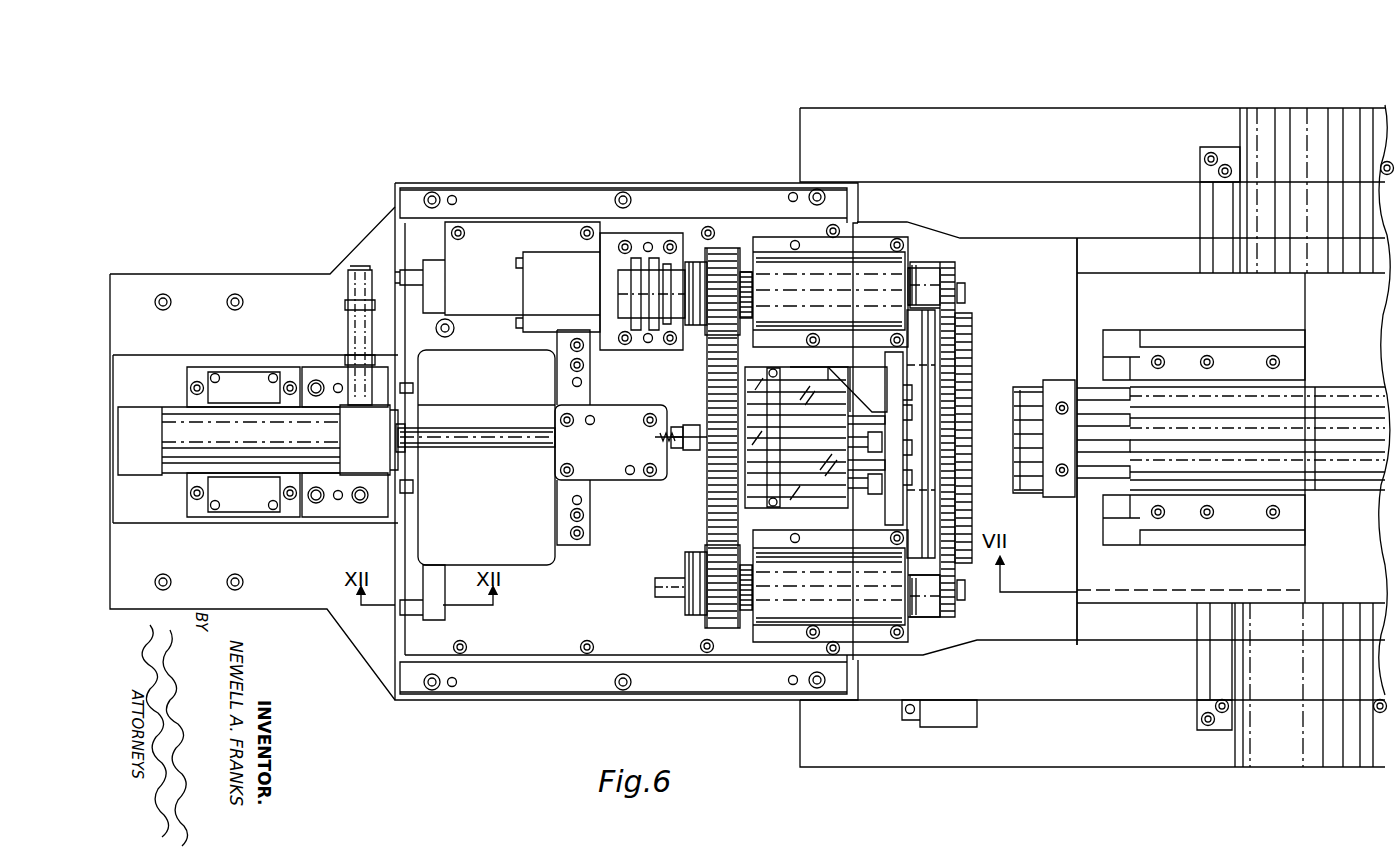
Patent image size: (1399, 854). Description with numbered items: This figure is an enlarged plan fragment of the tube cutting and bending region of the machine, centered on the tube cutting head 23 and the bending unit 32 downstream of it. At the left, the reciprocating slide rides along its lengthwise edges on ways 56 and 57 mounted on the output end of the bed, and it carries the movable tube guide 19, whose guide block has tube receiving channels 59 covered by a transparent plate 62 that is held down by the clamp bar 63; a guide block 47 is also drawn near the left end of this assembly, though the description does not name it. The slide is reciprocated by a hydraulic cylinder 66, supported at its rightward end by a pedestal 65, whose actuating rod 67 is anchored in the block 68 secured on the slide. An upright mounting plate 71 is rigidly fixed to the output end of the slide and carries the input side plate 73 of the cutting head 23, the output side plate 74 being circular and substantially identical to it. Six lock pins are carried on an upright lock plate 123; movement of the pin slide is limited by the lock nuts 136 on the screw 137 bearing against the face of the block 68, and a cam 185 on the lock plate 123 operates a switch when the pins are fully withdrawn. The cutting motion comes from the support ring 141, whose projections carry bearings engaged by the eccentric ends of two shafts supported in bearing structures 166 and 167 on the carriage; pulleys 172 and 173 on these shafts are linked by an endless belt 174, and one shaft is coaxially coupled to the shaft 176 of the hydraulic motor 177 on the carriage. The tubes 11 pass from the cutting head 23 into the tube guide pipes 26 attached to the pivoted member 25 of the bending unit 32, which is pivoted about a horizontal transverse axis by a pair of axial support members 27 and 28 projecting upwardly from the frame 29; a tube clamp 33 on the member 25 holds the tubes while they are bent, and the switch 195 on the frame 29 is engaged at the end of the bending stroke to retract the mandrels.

The tube 11 is at (858, 478).
The movable tube guide 19 is at (800, 392).
The tube cutting head 23 is at (995, 305).
The pivoted member 25 is at (1080, 318).
The tube guide pipe 26 is at (1030, 495).
The axial support member 27 is at (1207, 192).
The axial support member 28 is at (1212, 680).
The frame 29 is at (1228, 745).
The tube bending unit 32 is at (1222, 135).
The tube clamp 33 is at (1226, 355).
The guide block 47 is at (245, 370).
The way 56 is at (530, 195).
The way 57 is at (557, 682).
The tube receiving channel 59 is at (828, 488).
The transparent plate 62 is at (835, 390).
The clamp bar 63 is at (782, 442).
The pedestal 65 is at (402, 458).
The hydraulic cylinder 66 is at (178, 462).
The actuating rod 67 is at (480, 437).
The block 68 is at (600, 462).
The mounting plate 71 is at (918, 512).
The input side plate 73 is at (928, 315).
The output side plate 74 is at (972, 336).
The lock plate 123 is at (890, 540).
The lock nut 136 is at (687, 452).
The screw 137 is at (688, 428).
The support ring 141 is at (953, 266).
The bearing structure 166 is at (842, 291).
The bearing structure 167 is at (854, 589).
The pulley 172 is at (742, 250).
The pulley 173 is at (708, 630).
The endless belt 174 is at (712, 525).
The shaft 176 is at (640, 255).
The hydraulic motor 177 is at (557, 258).
The cam 185 is at (860, 380).
The switch 195 is at (963, 712).